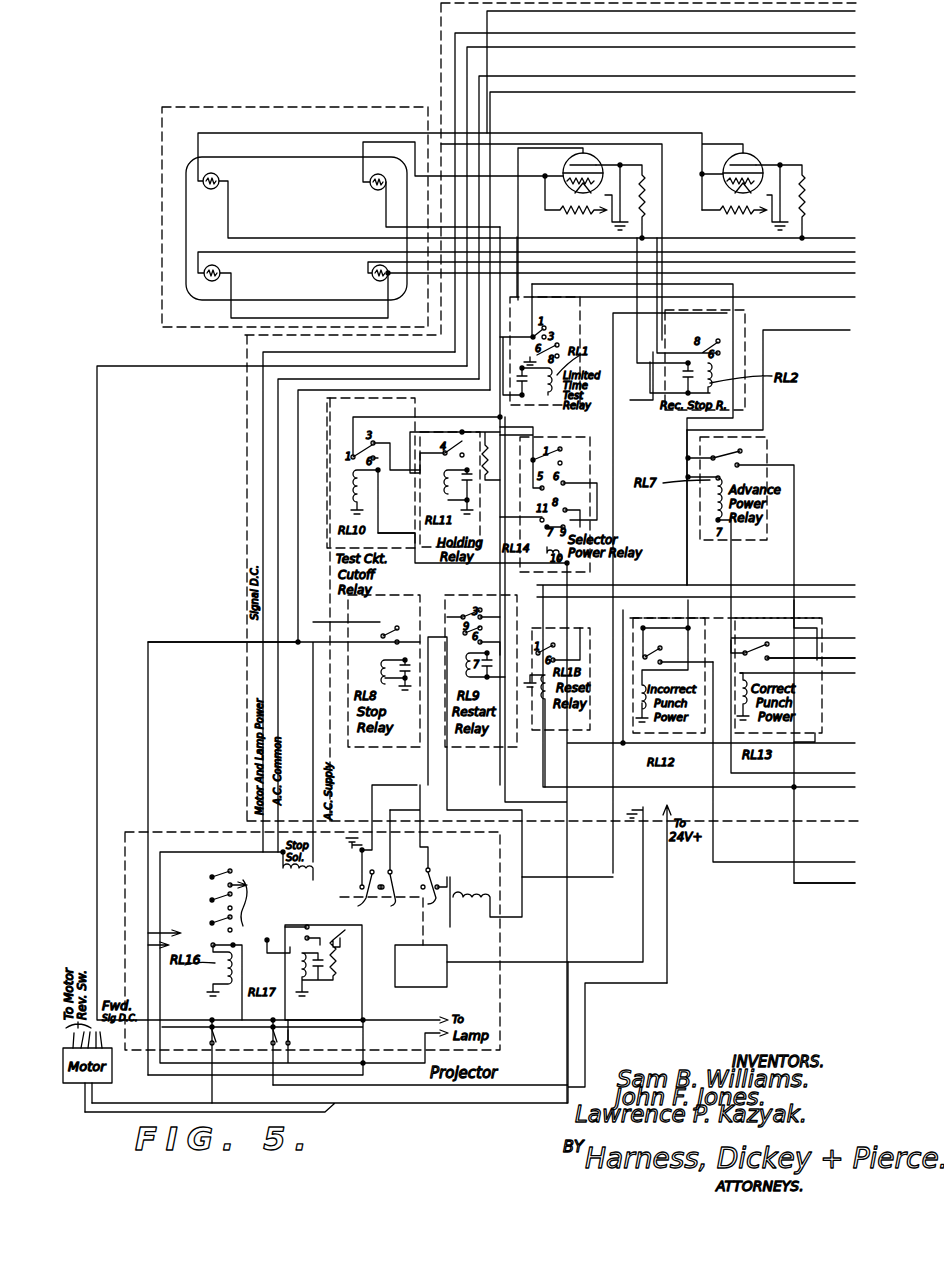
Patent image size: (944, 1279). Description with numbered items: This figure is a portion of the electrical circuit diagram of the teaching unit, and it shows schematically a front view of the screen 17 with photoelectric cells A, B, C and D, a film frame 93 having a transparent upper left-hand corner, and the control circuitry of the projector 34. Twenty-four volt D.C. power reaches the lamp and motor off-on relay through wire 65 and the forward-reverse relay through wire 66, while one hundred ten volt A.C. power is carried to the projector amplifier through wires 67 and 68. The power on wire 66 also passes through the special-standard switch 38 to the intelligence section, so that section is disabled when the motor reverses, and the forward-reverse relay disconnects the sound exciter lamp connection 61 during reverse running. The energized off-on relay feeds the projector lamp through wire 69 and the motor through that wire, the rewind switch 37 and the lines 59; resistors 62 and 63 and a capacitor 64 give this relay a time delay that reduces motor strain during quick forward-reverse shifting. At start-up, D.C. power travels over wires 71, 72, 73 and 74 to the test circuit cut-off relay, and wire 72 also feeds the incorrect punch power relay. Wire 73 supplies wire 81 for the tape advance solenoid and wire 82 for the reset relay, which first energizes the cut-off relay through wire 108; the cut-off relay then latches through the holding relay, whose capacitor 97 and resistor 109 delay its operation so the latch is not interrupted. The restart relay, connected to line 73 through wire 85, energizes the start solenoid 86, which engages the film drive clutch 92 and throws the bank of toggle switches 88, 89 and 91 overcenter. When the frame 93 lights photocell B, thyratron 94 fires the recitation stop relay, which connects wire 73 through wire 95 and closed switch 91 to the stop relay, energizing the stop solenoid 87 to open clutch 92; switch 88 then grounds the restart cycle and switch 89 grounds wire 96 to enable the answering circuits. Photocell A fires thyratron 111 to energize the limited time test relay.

The screen 17 is at (160, 138).
The film frame 93 is at (186, 217).
The wire 65 is at (823, 15).
The wire 66 is at (818, 48).
The wire 67 is at (803, 92).
The thyratron 111 is at (595, 155).
The thyratron 94 is at (757, 158).
The wire 74 is at (378, 418).
The wire 108 is at (396, 536).
The resistor 109 is at (466, 457).
The capacitor 97 is at (470, 488).
The wire 95 is at (610, 473).
The wire 73 is at (710, 553).
The wire 96 is at (430, 583).
The wire 85 is at (490, 584).
The wire 68 is at (173, 641).
The wire 72 is at (636, 765).
The wire 82 is at (668, 790).
The wire 71 is at (822, 747).
The wire 81 is at (823, 885).
The sound exciter lamp connection 61 is at (240, 880).
The stop solenoid 87 is at (302, 886).
The toggle switch 88 is at (374, 891).
The toggle switch 89 is at (400, 871).
The toggle switch 91 is at (440, 900).
The wire 69 is at (355, 950).
The start solenoid 86 is at (474, 915).
The capacitor 64 is at (298, 966).
The resistor 62 is at (298, 966).
The resistor 63 is at (268, 972).
The film drive clutch 92 is at (447, 980).
The special-standard switch 38 is at (210, 1040).
The rewind switch 37 is at (266, 1040).
The motor supply lines 59 is at (363, 1076).
The projector 34 is at (541, 1072).